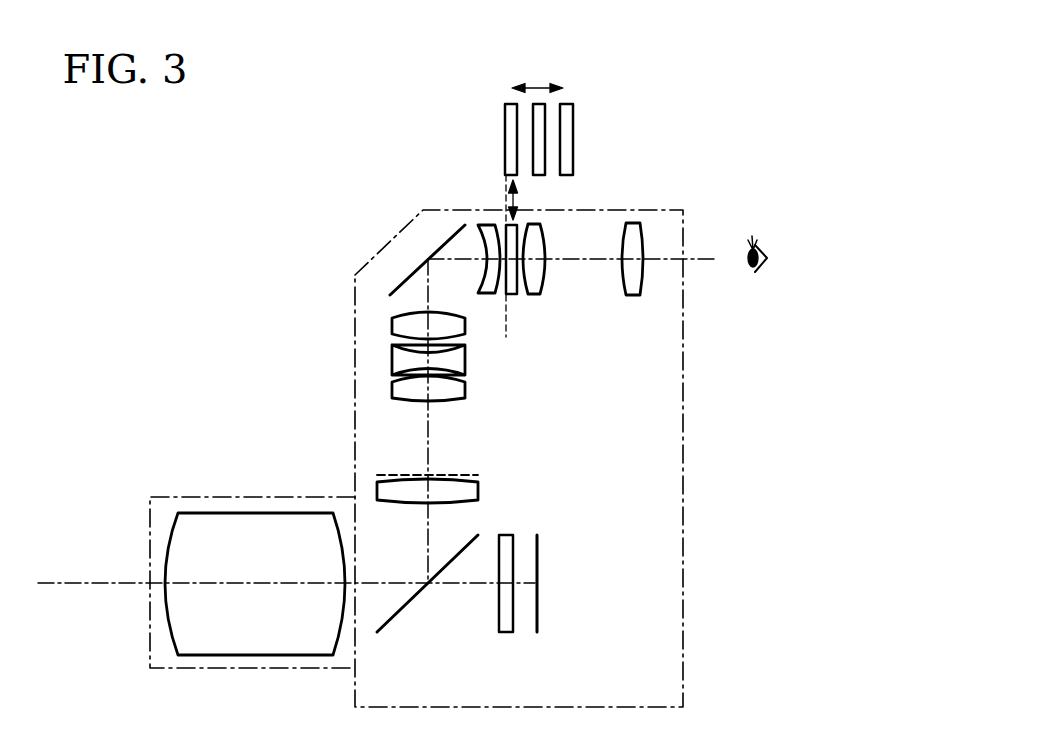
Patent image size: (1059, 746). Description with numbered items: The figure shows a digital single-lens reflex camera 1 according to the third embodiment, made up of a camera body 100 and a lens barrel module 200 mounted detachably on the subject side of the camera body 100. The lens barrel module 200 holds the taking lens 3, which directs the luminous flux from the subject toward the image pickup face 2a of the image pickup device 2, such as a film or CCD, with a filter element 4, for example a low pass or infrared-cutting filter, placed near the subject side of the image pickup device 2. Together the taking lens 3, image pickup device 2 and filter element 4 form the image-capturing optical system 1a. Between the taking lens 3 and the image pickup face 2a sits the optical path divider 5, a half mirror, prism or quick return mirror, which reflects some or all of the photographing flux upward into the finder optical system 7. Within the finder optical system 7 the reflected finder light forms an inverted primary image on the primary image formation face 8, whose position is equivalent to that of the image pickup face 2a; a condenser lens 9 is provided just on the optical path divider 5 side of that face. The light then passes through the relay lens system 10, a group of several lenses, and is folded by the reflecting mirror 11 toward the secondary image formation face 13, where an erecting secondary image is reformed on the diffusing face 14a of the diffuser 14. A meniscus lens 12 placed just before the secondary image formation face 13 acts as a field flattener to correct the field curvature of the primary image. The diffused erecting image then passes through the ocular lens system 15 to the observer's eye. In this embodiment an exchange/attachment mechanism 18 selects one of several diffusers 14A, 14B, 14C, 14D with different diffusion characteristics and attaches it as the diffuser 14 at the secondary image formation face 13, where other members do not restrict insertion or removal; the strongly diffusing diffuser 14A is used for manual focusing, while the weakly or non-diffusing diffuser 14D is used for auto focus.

The single-lens reflex camera 1 is at (163, 386).
The image-capturing optical system 1a is at (426, 649).
The image pickup device 2 is at (558, 608).
The image pickup face 2a is at (535, 612).
The taking lens 3 is at (228, 513).
The filter element 4 is at (505, 632).
The optical path divider 5 is at (380, 622).
The finder optical system 7 is at (340, 292).
The primary image formation face 8 is at (478, 475).
The condenser lens 9 is at (478, 491).
The relay lens system 10 is at (377, 313).
The reflecting mirror 11 is at (405, 281).
The meniscus lens 12 is at (478, 240).
The secondary image formation face 13 is at (505, 193).
The diffuser 14 is at (559, 91).
The diffuser 14A is at (555, 305).
The diffusing face 14a is at (506, 286).
The diffuser 14B is at (505, 123).
The diffuser 14C is at (538, 104).
The diffuser 14D is at (573, 123).
The ocular lens system 15 is at (643, 240).
The exchange/attachment mechanism 18 is at (604, 160).
The camera body 100 is at (683, 428).
The lens barrel module 200 is at (150, 527).